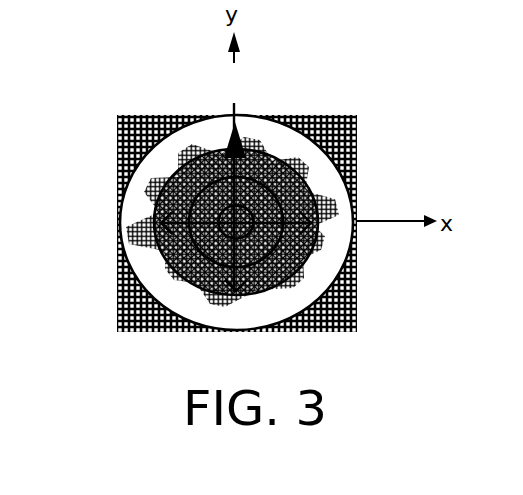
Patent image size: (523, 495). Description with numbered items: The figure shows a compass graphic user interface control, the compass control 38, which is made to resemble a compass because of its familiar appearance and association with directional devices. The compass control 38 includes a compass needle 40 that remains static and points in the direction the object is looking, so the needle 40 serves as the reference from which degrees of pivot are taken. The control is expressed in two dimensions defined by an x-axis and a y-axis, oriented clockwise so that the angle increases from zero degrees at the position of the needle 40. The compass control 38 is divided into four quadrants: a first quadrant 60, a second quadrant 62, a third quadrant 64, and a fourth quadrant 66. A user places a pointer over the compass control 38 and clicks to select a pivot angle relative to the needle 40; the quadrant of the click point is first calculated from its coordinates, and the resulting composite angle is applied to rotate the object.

The compass control 38 is at (368, 123).
The compass needle 40 is at (235, 162).
The first quadrant 60 is at (290, 182).
The second quadrant 62 is at (287, 256).
The third quadrant 64 is at (186, 270).
The fourth quadrant 66 is at (186, 170).